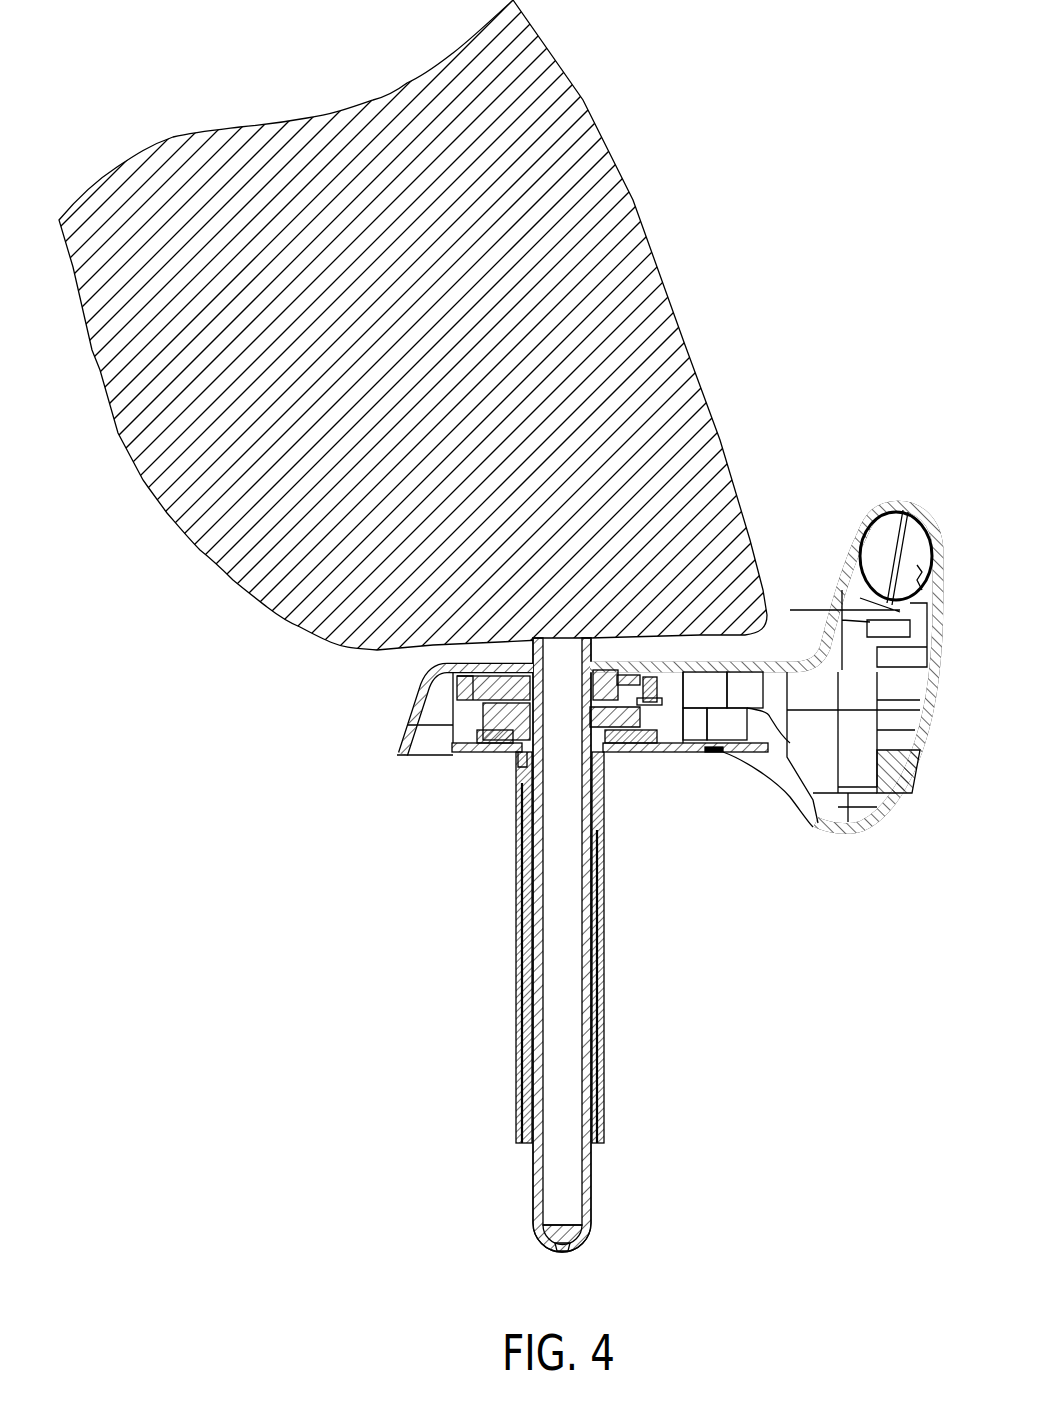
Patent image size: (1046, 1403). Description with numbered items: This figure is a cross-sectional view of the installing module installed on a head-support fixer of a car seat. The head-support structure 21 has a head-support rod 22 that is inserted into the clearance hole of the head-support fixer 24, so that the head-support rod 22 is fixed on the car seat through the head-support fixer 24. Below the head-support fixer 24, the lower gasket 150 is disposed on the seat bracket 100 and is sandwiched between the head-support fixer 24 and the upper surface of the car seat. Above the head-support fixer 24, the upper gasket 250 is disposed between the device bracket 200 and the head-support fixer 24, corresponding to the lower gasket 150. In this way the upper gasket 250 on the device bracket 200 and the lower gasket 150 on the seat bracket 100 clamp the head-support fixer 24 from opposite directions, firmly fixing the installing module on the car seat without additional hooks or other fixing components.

The head-support structure 21 is at (663, 330).
The head-support rod 22 is at (570, 1187).
The head-support fixer 24 is at (455, 753).
The seat bracket 100 is at (720, 752).
The lower gasket 150 is at (485, 753).
The device bracket 200 is at (873, 512).
The upper gasket 250 is at (427, 678).